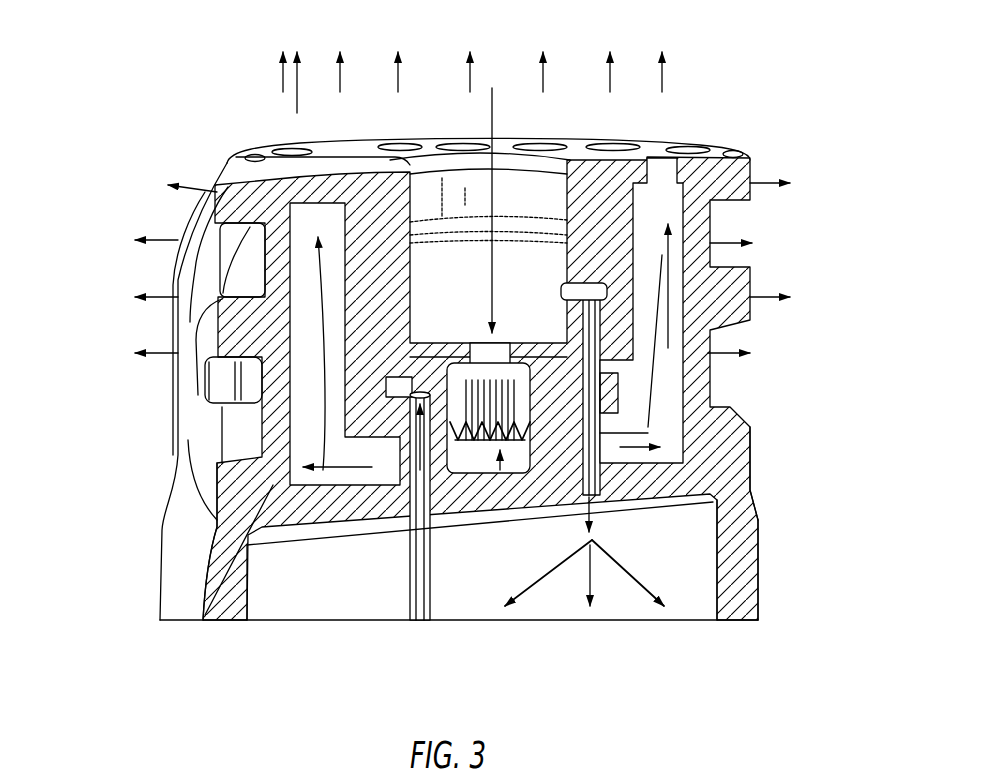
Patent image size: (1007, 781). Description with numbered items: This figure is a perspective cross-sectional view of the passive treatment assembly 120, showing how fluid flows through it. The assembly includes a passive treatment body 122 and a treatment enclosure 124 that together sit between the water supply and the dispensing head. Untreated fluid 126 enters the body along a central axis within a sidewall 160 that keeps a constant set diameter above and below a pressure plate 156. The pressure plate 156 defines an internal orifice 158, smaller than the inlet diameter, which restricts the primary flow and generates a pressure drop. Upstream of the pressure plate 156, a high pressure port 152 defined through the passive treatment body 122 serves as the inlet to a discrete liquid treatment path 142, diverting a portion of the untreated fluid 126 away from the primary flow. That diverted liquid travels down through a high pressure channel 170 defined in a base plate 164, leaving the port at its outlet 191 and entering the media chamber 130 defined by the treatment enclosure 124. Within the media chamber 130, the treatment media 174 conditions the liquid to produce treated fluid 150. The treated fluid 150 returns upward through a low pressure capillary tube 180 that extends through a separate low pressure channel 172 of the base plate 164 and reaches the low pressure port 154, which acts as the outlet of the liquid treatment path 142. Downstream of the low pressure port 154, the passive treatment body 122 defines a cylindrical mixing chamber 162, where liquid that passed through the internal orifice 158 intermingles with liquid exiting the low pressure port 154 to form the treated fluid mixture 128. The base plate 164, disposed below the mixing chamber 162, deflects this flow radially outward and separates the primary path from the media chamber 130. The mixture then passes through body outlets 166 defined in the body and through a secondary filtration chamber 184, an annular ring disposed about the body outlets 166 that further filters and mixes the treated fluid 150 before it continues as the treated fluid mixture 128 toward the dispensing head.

The passive treatment assembly 120 is at (104, 111).
The passive treatment body 122 is at (752, 448).
The treatment enclosure 124 is at (760, 560).
The untreated fluid 126 is at (493, 103).
The treated fluid mixture 128 is at (282, 80).
The media chamber 130 is at (298, 588).
The liquid treatment path 142 is at (628, 568).
The treated fluid 150 is at (423, 577).
The high pressure port 152 is at (503, 293).
The low pressure port 154 is at (418, 393).
The pressure plate 156 is at (522, 354).
The internal orifice 158 is at (480, 337).
The sidewall 160 is at (570, 232).
The mixing chamber 162 is at (500, 473).
The base plate 164 is at (351, 502).
The body outlet 166 is at (404, 128).
The high pressure channel 170 is at (600, 433).
The low pressure channel 172 is at (203, 620).
The treatment media 174 is at (700, 580).
The low pressure capillary tube 180 is at (408, 607).
The secondary filtration chamber 184 is at (305, 272).
The outlet of high pressure port 191 is at (583, 516).